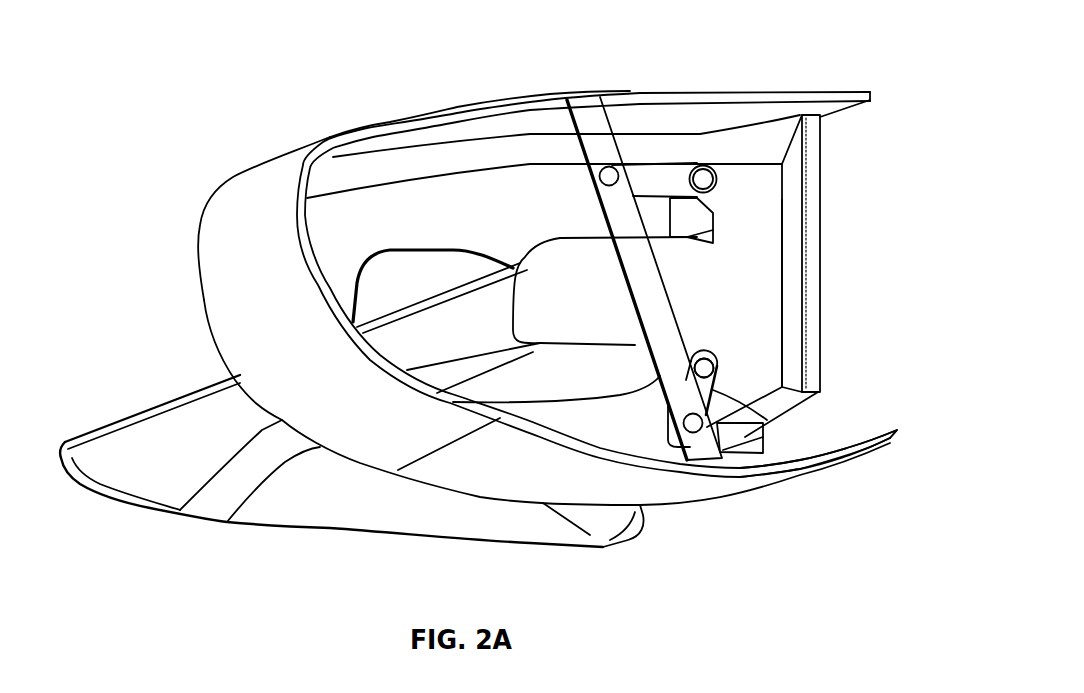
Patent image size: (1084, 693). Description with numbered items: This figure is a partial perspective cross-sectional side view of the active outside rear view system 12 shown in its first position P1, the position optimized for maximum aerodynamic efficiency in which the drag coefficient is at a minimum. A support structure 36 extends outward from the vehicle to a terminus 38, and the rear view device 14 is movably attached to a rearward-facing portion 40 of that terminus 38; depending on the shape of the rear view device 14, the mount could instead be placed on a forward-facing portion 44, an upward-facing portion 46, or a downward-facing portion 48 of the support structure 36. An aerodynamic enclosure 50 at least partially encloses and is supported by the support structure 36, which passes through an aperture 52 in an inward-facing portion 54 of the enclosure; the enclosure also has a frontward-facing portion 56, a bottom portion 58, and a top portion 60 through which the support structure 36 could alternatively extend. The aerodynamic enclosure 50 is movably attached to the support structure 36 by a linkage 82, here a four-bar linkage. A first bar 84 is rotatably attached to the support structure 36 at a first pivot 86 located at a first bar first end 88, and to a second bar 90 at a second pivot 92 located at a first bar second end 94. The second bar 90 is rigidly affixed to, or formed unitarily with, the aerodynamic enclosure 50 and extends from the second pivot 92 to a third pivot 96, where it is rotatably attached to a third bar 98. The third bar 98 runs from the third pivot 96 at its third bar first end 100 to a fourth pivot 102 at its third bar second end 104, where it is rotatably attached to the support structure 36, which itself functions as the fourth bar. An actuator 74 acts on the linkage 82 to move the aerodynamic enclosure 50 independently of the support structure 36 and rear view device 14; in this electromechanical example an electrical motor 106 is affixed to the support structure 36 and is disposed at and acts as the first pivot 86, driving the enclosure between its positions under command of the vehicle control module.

The active outside rear view system 12 is at (183, 125).
The forward-facing portion 56 is at (213, 178).
The first position P1 is at (167, 262).
The support structure 36 is at (155, 402).
The aerodynamic enclosure 50 is at (450, 106).
The top portion 60 is at (523, 92).
The first bar second end 94 is at (767, 472).
The inward-facing portion 54 is at (418, 203).
The bottom portion 58 is at (473, 470).
The second bar 90 is at (687, 380).
The aperture 52 is at (363, 288).
The forward-facing portion 44 is at (462, 313).
The terminus 38 is at (533, 270).
The upward-facing portion 46 is at (573, 237).
The downward-facing portion 48 is at (571, 368).
The third pivot 96 is at (572, 100).
The linkage 82 is at (678, 297).
The third bar first end 100 is at (646, 160).
The third bar 98 is at (657, 175).
The fourth pivot 102 is at (705, 165).
The third bar second end 104 is at (715, 175).
The rear view device 14 is at (825, 213).
The rearward-facing portion 40 is at (847, 293).
The first bar first end 88 is at (708, 355).
The actuator 74 is at (814, 375).
The electrical motor 106 is at (713, 364).
The first pivot 86 is at (767, 395).
The first bar 84 is at (767, 427).
The second pivot 92 is at (697, 430).